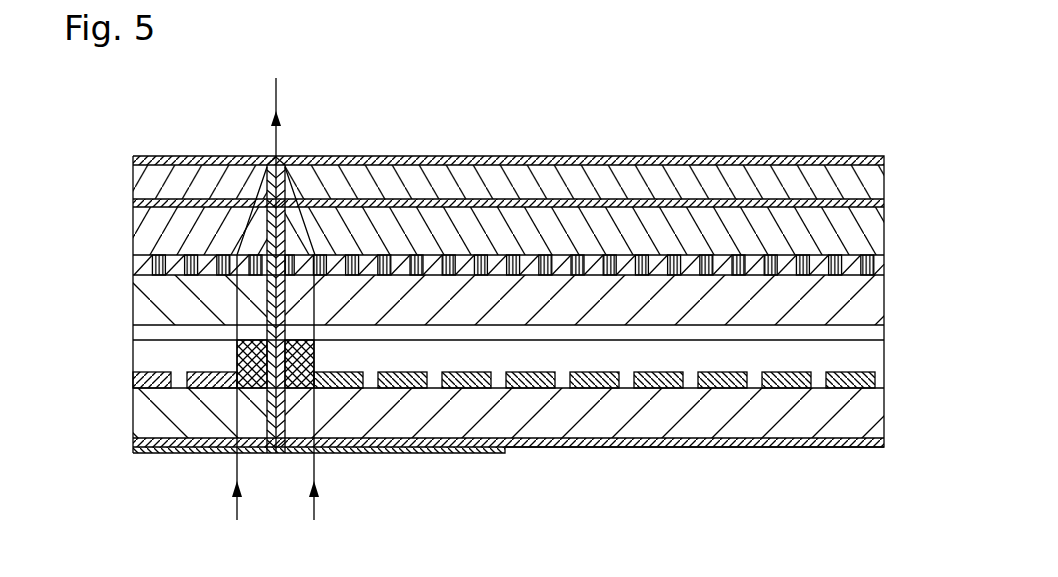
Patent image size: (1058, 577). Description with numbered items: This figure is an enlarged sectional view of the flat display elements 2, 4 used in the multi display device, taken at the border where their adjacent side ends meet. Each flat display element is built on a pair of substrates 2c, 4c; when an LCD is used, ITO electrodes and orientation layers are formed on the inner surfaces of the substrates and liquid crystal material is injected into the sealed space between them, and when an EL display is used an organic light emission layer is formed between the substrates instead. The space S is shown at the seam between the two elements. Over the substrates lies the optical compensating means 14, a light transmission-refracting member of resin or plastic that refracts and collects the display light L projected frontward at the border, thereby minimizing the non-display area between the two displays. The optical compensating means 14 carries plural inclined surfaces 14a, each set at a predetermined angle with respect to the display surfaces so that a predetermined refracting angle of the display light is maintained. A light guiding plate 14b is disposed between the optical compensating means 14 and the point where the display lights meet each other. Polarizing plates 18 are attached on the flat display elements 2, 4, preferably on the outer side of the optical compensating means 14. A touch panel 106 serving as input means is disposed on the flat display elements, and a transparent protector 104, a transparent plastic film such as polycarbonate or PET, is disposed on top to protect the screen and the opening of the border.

The flat display element 2 is at (209, 132).
The flat display element 4 is at (731, 131).
The display light L is at (278, 146).
The slit / space S is at (300, 440).
The transparent protector 104 is at (884, 160).
The touch panel 106 is at (873, 182).
The polarizing plate 18 is at (884, 203).
The light guiding plate 14b is at (873, 229).
The optical compensating means 14 is at (535, 381).
The inclined surface 14a is at (532, 262).
The substrate 2c is at (133, 410).
The substrate 4c is at (880, 405).